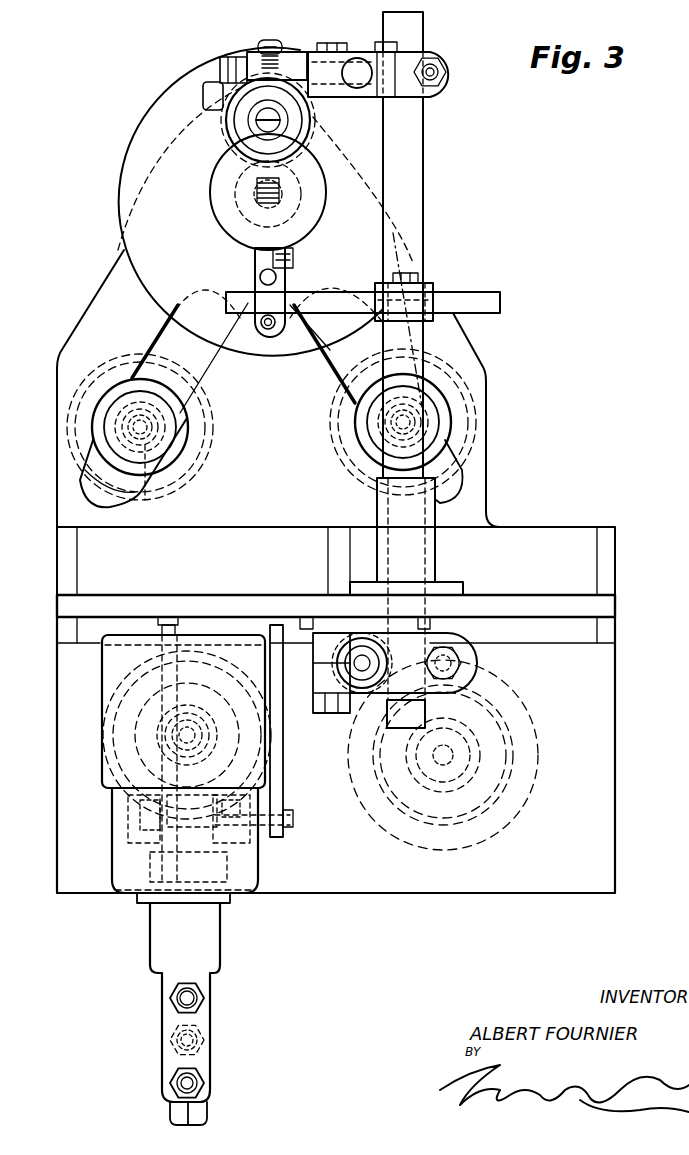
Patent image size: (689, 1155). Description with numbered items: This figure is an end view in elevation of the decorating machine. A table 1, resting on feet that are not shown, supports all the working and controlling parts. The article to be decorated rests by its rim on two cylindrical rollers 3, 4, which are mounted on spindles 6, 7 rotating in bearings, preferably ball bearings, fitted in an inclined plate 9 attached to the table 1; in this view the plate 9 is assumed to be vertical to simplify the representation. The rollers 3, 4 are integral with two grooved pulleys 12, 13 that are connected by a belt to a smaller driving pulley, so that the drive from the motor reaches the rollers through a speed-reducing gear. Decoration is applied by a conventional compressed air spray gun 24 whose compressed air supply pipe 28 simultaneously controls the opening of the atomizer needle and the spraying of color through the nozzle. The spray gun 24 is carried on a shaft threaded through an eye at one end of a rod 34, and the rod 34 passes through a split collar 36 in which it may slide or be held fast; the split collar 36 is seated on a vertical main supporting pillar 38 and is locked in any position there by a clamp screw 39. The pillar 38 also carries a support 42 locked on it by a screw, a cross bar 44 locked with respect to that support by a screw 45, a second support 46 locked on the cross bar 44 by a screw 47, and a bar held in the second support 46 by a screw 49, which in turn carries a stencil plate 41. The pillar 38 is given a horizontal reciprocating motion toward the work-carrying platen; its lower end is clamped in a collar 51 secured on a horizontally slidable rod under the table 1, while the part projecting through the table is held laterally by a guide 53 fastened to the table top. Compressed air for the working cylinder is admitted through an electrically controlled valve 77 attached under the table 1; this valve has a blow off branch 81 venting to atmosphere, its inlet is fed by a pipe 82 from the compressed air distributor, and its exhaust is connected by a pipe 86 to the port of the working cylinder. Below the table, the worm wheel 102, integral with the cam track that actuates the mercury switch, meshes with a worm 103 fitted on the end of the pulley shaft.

The table 1 is at (302, 607).
The cylindrical roller 3 is at (185, 412).
The cylindrical roller 4 is at (355, 420).
The spindle 6 is at (148, 488).
The spindle 7 is at (443, 428).
The inclined plate 9 is at (353, 160).
The grooved pulley 12 is at (167, 360).
The grooved pulley 13 is at (377, 362).
The spray gun 24 is at (245, 137).
The compressed air supply pipe 28 is at (280, 46).
The rod 34 is at (357, 80).
The split collar 36 is at (407, 58).
The main supporting pillar 38 is at (413, 108).
The clamp screw 39 is at (445, 67).
The stencil plate 41 is at (145, 143).
The support 42 is at (433, 285).
The cross bar 44 is at (317, 298).
The screw 45 is at (415, 275).
The second support 46 is at (257, 280).
The screw 47 is at (267, 330).
The screw 49 is at (293, 258).
The collar 51 is at (410, 642).
The guide 53 is at (428, 547).
The electrically controlled valve 77 is at (252, 843).
The blow off branch 81 is at (200, 987).
The pipe 82 is at (190, 1083).
The pipe 86 is at (202, 1037).
The worm wheel 102 is at (258, 890).
The worm 103 is at (197, 703).